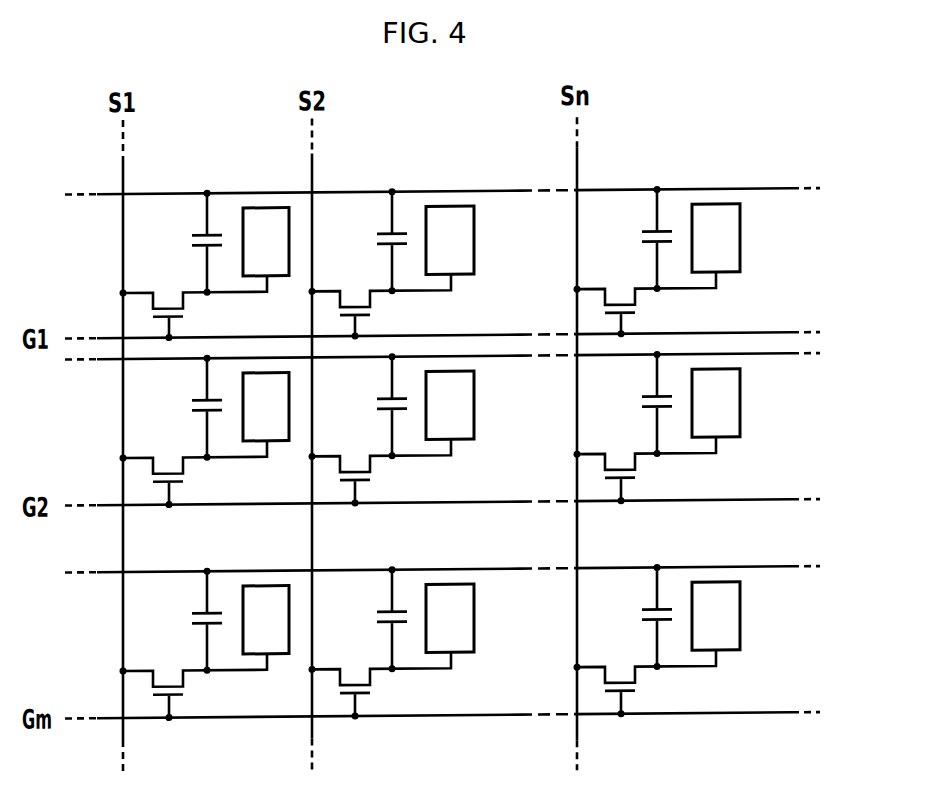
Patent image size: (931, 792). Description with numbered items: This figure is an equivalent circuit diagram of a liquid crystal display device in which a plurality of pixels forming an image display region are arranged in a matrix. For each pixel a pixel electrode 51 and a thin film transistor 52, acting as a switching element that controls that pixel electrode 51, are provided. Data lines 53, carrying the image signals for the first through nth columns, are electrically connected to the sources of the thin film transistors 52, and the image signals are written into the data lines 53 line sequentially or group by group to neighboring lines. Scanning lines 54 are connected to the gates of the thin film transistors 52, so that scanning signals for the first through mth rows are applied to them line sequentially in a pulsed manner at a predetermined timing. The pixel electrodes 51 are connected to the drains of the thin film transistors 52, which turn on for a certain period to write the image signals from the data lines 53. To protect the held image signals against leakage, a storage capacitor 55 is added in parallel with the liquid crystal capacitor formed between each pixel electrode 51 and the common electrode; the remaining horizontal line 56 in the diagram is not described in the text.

The pixel electrode 51 is at (268, 216).
The thin film transistor 52 is at (134, 312).
The data line 53 is at (123, 167).
The scanning line 54 is at (763, 338).
The storage capacitor 55 is at (171, 243).
The power supply line 56 is at (753, 194).